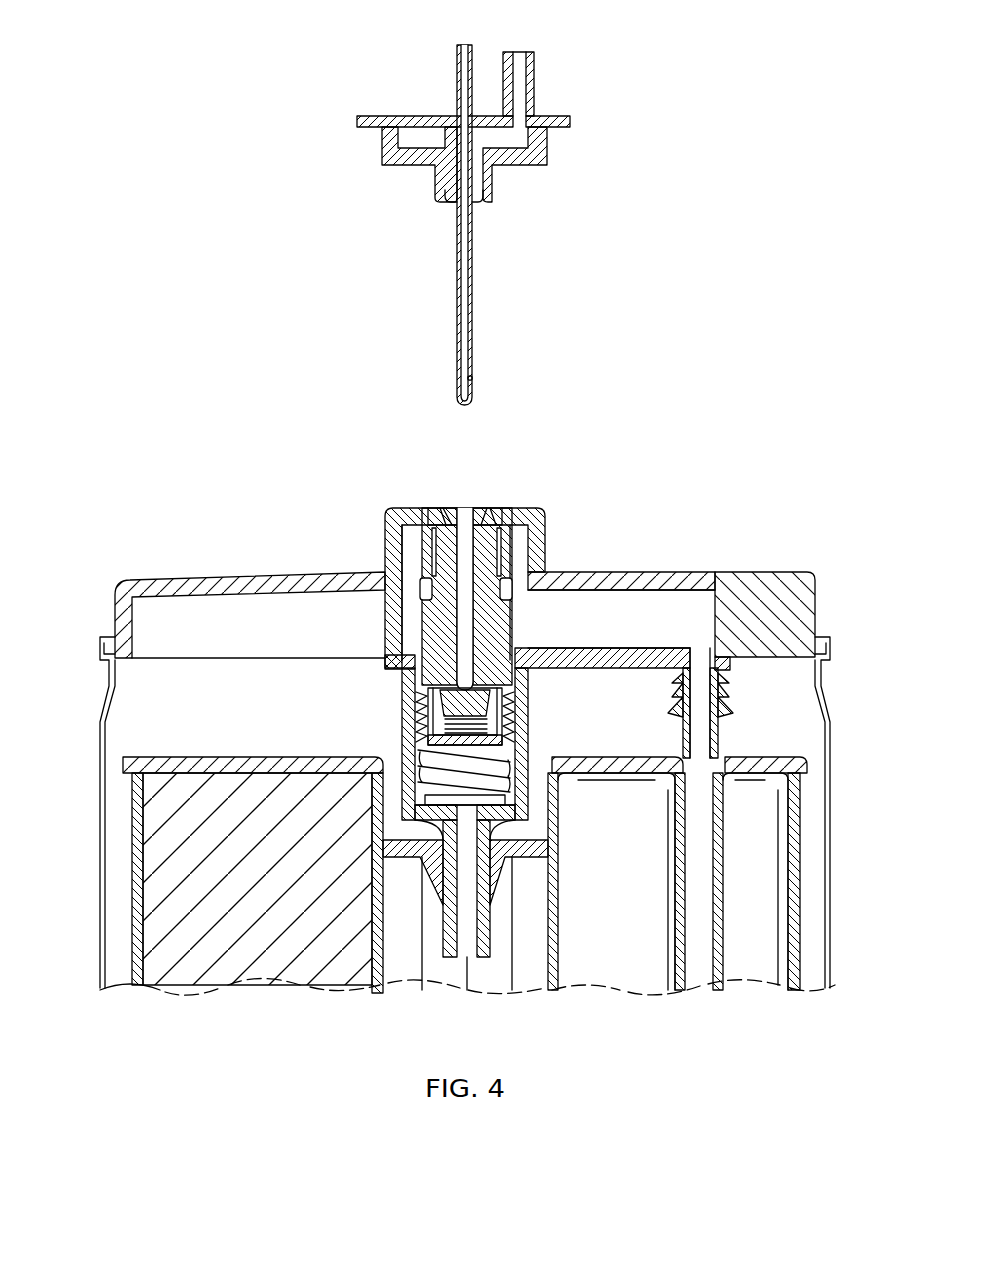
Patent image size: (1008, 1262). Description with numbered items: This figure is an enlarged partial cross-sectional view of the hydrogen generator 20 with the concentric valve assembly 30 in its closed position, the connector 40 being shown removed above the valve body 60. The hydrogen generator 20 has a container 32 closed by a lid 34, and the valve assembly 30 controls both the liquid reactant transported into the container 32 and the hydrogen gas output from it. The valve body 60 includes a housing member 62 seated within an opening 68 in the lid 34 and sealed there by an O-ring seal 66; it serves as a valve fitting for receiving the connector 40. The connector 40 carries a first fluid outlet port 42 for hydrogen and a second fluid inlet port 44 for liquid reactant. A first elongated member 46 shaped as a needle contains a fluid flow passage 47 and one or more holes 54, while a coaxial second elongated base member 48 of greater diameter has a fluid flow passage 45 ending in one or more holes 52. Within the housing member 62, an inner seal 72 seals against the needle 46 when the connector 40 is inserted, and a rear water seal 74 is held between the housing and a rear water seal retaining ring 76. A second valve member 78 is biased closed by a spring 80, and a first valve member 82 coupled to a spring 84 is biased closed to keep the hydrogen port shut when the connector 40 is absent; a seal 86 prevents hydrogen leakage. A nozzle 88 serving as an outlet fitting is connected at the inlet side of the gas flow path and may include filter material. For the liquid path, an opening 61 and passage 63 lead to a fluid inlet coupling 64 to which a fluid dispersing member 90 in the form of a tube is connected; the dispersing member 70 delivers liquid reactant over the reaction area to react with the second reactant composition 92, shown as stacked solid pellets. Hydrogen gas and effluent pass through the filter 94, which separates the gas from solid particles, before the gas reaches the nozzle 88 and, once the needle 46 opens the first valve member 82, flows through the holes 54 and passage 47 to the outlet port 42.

The hydrogen generator 20 is at (106, 192).
The concentric valve assembly 30 is at (610, 405).
The container 32 is at (834, 884).
The lid 34 is at (122, 592).
The connector 40 is at (574, 110).
The first fluid outlet port 42 is at (456, 46).
The second fluid inlet port 44 is at (536, 50).
The fluid flow passage 45 is at (518, 137).
The first elongated member 46 is at (474, 292).
The fluid flow passage 47 is at (462, 340).
The second elongated base member 48 is at (486, 196).
The holes 52 is at (446, 194).
The holes 54 is at (474, 380).
The valve body 60 is at (514, 543).
The opening 61 is at (516, 590).
The valve housing 62 is at (403, 700).
The passage 63 is at (612, 600).
The fluid inlet coupling 64 is at (714, 716).
The O-ring seal 66 is at (433, 508).
The opening 68 is at (424, 536).
The dispersing member 70 is at (704, 656).
The inner seal 72 is at (452, 508).
The rear water seal 74 is at (520, 658).
The rear water seal retaining ring 76 is at (398, 666).
The second valve member 78 is at (428, 612).
The spring 80 is at (506, 782).
The first valve member 82 is at (503, 690).
The spring 84 is at (484, 719).
The seal 86 is at (508, 748).
The nozzle 88 is at (532, 914).
The fluid dispersing member 90 is at (722, 873).
The second reactant composition 92 is at (176, 866).
The filter 94 is at (405, 966).